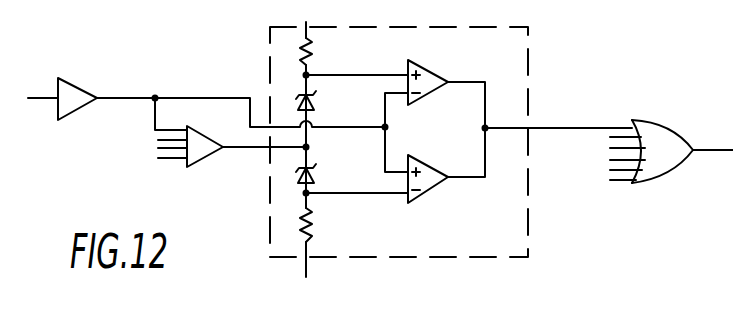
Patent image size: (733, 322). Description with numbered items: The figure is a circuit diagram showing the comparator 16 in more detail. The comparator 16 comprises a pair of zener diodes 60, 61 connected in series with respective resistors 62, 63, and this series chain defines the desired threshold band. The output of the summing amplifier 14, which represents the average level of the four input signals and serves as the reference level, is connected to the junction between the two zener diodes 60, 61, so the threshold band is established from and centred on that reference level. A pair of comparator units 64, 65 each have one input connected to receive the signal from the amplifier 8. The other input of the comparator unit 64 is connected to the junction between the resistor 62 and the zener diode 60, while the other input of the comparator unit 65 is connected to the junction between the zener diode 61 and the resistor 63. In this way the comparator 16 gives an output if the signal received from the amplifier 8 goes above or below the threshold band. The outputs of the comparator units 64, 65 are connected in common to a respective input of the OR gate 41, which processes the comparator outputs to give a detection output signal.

The amplifier 8 is at (84, 90).
The summing amplifier 14 is at (205, 162).
The comparator 16 is at (417, 247).
The OR gate 41 is at (677, 133).
The zener diode 60 is at (317, 107).
The zener diode 61 is at (315, 174).
The resistor 62 is at (317, 50).
The resistor 63 is at (317, 224).
The comparator unit 64 is at (435, 72).
The comparator unit 65 is at (425, 162).